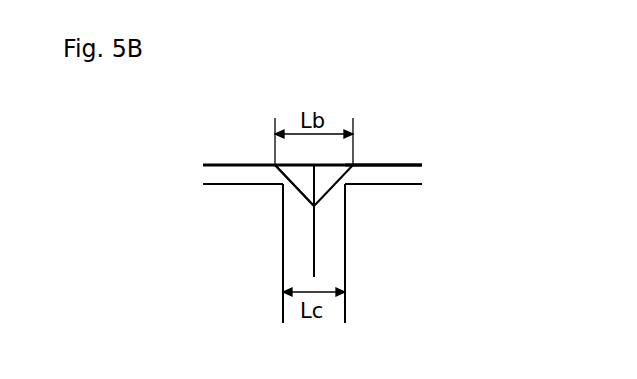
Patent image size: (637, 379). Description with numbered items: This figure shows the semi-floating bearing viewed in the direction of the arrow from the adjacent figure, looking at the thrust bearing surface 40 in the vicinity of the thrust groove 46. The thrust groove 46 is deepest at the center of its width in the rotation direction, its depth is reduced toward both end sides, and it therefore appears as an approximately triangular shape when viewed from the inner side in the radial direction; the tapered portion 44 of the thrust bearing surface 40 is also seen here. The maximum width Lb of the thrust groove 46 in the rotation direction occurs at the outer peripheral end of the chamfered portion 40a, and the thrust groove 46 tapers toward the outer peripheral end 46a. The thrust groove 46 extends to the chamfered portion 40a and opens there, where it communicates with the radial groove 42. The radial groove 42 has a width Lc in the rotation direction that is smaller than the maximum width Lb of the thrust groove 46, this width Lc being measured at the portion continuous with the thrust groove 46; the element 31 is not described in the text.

The thrust bearing surface 40 is at (215, 163).
The tapered portion 44 is at (227, 163).
The chamfered portion 40a is at (390, 172).
The substrate 31 is at (388, 215).
The radial groove 42 is at (348, 246).
The thrust groove 46 is at (302, 190).
The outer peripheral end 46a is at (310, 165).